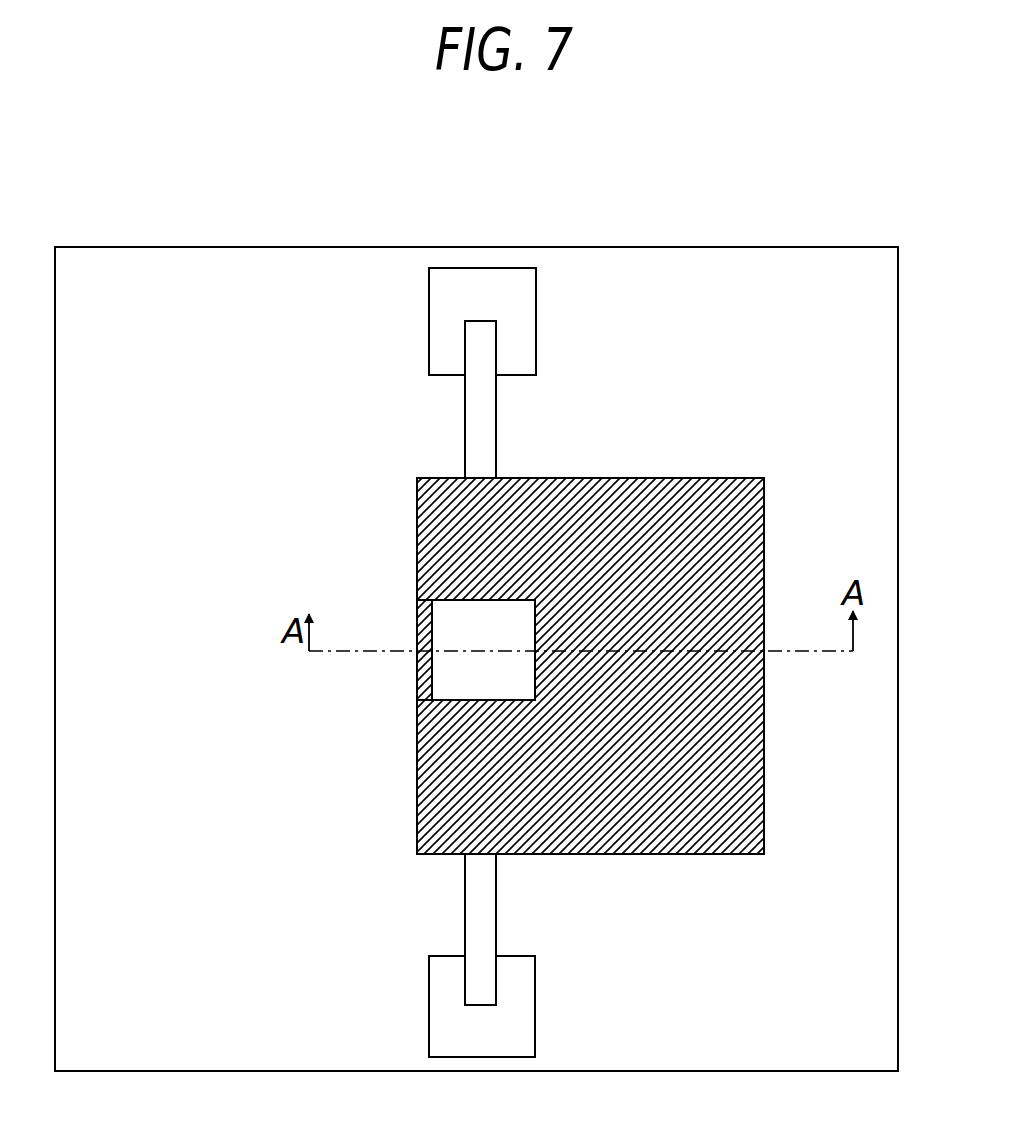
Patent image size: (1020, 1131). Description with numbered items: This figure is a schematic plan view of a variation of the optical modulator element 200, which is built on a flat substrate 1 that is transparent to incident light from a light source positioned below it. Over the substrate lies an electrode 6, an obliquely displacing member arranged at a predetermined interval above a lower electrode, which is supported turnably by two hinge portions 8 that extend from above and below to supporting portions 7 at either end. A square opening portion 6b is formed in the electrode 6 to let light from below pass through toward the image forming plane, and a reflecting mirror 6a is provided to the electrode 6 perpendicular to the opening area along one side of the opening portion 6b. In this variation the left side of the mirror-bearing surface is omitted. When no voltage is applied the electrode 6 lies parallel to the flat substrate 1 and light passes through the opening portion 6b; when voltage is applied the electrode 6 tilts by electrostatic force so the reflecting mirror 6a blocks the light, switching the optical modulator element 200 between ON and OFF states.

The flat substrate 1 is at (888, 528).
The optical modulator element 200 is at (764, 214).
The electrode 6 is at (700, 478).
The reflecting mirror 6a is at (417, 595).
The opening portion 6b is at (503, 627).
The supporting portion 7 is at (522, 320).
The hinge portion 8 is at (488, 423).